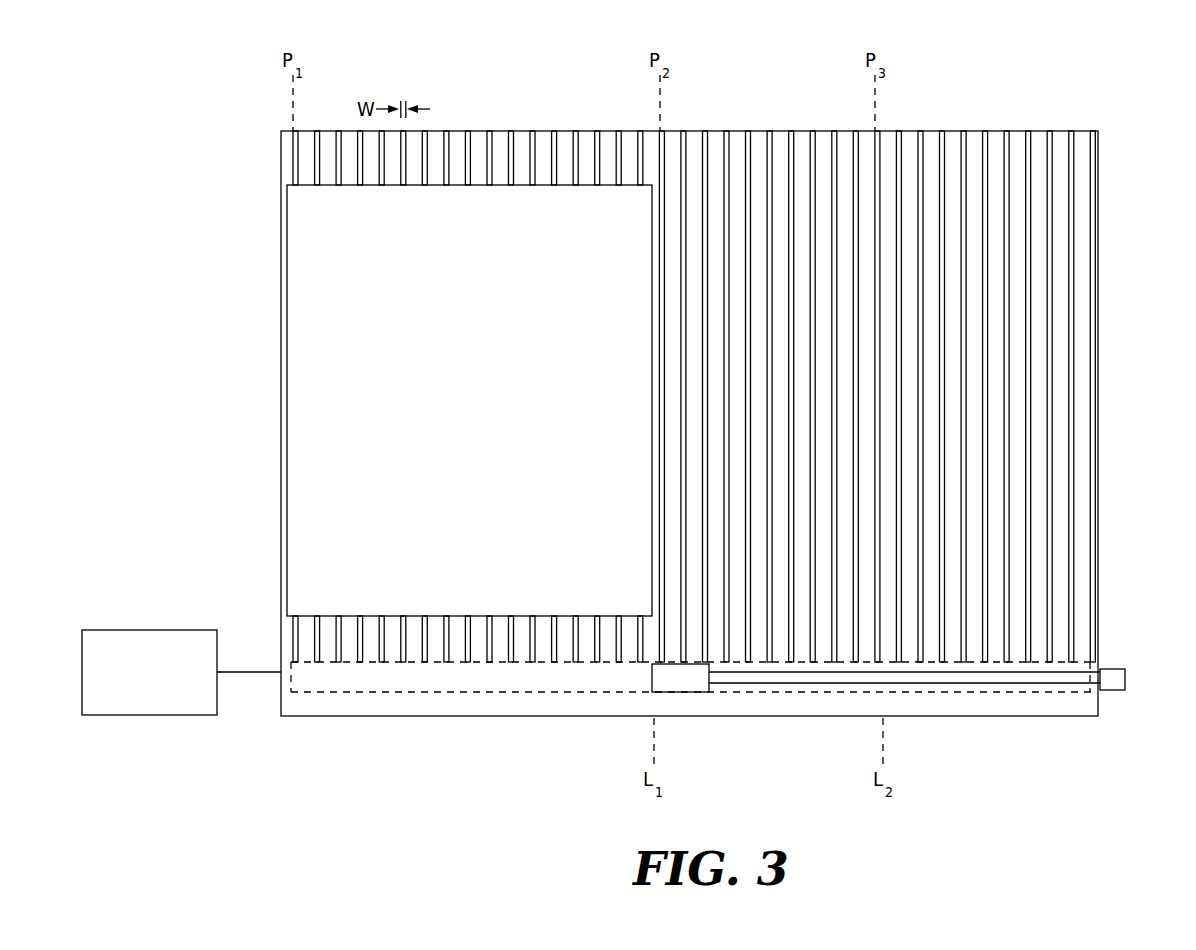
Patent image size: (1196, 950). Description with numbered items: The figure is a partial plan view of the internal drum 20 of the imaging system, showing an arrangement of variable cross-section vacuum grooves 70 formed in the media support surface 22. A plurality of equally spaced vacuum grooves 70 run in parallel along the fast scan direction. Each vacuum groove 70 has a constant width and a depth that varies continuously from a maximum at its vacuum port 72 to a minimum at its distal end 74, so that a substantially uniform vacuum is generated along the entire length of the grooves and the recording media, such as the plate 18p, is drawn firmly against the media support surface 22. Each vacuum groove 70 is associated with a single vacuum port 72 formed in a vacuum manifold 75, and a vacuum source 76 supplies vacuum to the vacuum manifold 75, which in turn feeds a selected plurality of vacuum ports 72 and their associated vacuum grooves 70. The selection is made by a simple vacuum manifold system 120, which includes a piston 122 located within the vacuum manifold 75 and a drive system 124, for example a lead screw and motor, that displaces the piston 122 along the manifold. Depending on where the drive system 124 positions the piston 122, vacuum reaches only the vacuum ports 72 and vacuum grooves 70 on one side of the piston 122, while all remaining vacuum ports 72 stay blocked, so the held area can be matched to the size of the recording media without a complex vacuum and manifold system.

The internal drum 20 is at (1122, 80).
The media support surface 22 is at (1098, 198).
The plate 18p is at (300, 232).
The vacuum grooves 70 is at (749, 138).
The vacuum ports 72 is at (425, 662).
The distal end 74 is at (1028, 138).
The vacuum manifold 75 is at (530, 700).
The vacuum source 76 is at (168, 705).
The vacuum manifold system 120 is at (802, 704).
The piston 122 is at (690, 688).
The drive system 124 is at (1073, 704).